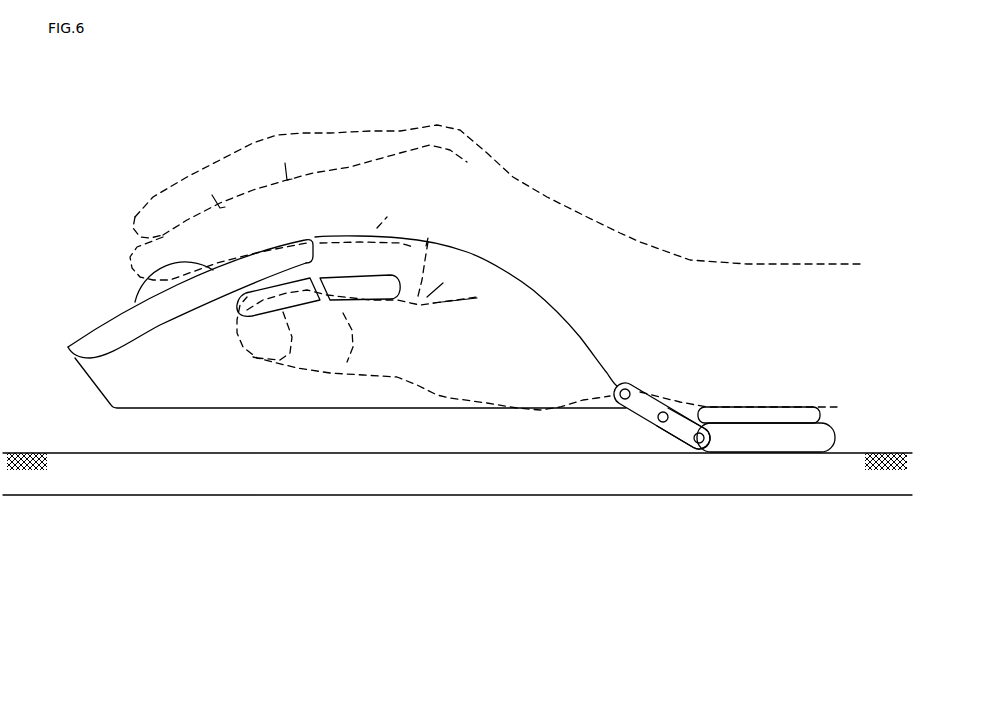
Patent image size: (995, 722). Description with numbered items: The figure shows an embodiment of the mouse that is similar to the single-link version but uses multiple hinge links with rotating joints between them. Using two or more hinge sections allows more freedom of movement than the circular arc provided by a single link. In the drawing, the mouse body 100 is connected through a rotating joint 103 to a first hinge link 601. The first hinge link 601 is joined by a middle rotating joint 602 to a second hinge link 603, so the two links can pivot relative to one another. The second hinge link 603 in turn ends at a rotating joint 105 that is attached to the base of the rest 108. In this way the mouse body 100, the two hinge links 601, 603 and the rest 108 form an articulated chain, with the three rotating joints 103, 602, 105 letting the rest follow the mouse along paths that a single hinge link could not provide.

The mouse body 100 is at (585, 401).
The rotating joint 103 is at (615, 406).
The first hinge link 601 is at (638, 413).
The middle rotating joint 602 is at (658, 425).
The second hinge link 603 is at (678, 438).
The rotating joint 105 is at (700, 448).
The rest 108 is at (767, 442).